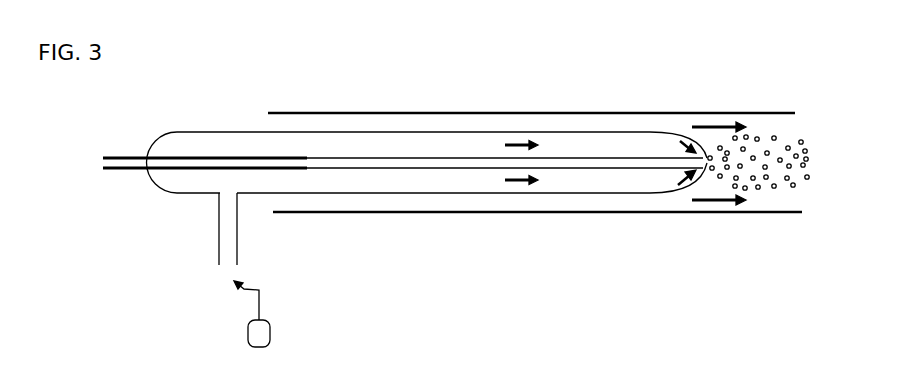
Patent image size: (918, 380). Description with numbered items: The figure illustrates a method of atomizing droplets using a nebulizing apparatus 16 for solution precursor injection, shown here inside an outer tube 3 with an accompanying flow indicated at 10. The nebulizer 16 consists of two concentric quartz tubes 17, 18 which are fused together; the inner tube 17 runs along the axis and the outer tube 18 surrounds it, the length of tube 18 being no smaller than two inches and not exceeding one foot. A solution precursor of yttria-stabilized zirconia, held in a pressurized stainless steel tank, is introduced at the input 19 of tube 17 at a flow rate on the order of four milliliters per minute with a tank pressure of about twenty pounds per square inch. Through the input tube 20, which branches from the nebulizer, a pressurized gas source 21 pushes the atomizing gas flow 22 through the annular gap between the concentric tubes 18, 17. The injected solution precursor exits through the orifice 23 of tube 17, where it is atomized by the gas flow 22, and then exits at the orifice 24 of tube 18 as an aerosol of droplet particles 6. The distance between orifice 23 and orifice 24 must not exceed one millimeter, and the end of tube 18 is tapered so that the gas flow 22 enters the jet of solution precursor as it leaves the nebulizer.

The outer tube 3 is at (583, 112).
The particles 6 is at (772, 153).
The outer gas flow 10 is at (712, 123).
The nebulizing apparatus 16 is at (158, 110).
The tube 17 is at (407, 169).
The tube 18 is at (443, 195).
The input 19 is at (93, 153).
The input tube 20 is at (217, 230).
The pressurized gas source 21 is at (250, 338).
The atomizing gas flow 22 is at (513, 180).
The orifice 23 is at (684, 144).
The orifice 24 is at (683, 182).